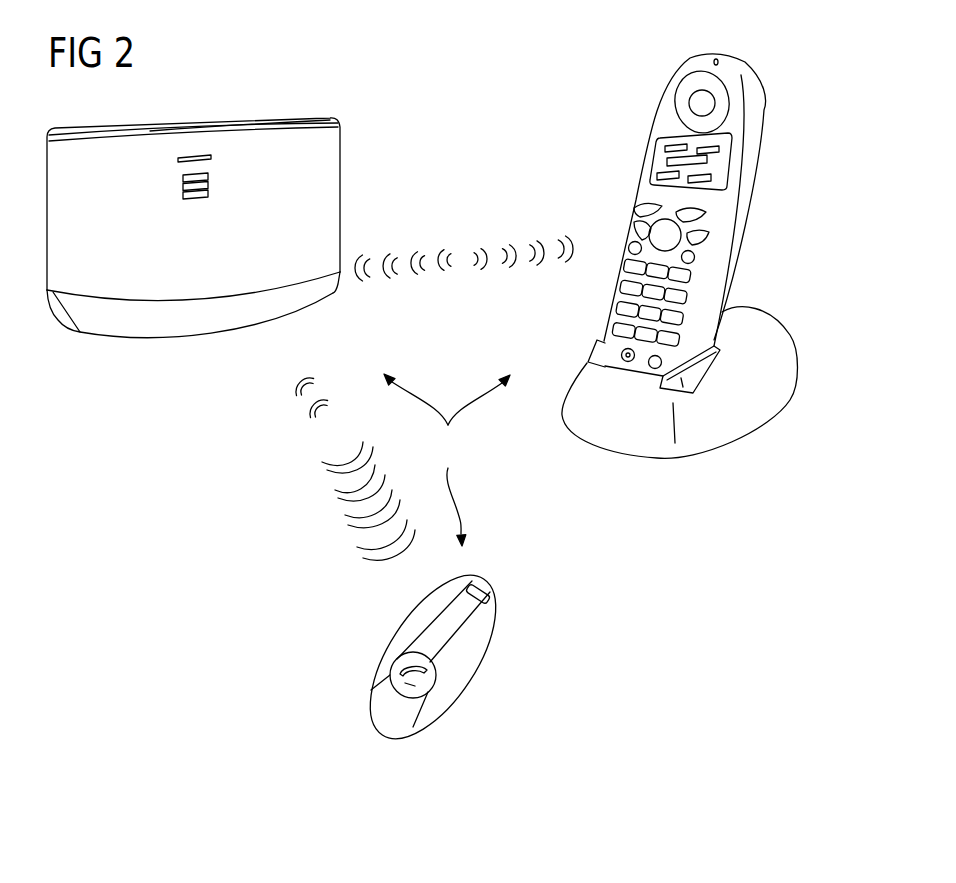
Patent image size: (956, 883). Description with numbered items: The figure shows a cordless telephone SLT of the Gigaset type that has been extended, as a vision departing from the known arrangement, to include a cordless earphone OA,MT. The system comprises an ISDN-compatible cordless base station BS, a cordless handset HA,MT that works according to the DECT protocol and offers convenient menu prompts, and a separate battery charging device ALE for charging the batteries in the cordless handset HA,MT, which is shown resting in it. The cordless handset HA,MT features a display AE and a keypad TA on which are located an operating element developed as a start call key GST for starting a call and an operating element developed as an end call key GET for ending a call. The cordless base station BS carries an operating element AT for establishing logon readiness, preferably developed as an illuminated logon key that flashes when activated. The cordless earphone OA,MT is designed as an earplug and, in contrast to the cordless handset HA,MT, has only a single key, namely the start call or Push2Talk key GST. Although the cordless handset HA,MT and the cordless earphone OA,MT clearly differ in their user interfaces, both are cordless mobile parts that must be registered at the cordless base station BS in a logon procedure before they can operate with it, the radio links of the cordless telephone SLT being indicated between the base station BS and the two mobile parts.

The operating element for establishing logon readiness AT is at (207, 123).
The cordless base station BS is at (277, 315).
The cordless handset HA,MT is at (718, 215).
The display AE is at (663, 160).
The start call key GST is at (643, 207).
The end call key GET is at (708, 212).
The keypad TA is at (617, 241).
The battery charging device ALE is at (750, 407).
The cordless telephone SLT is at (447, 460).
The cordless earphone OA,MT is at (467, 668).